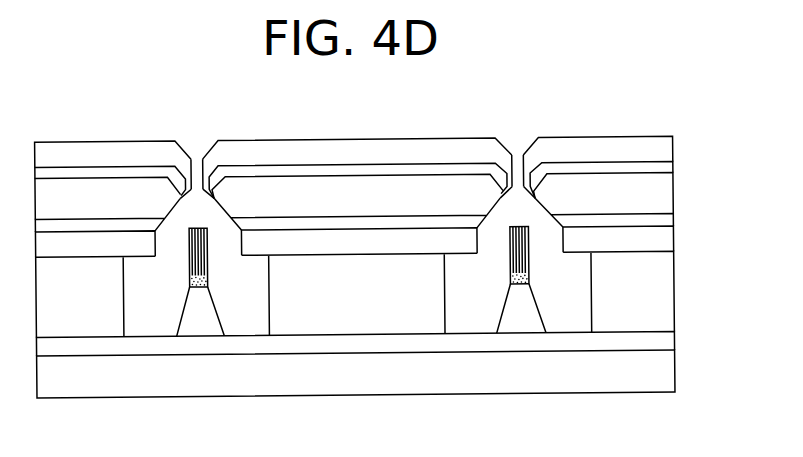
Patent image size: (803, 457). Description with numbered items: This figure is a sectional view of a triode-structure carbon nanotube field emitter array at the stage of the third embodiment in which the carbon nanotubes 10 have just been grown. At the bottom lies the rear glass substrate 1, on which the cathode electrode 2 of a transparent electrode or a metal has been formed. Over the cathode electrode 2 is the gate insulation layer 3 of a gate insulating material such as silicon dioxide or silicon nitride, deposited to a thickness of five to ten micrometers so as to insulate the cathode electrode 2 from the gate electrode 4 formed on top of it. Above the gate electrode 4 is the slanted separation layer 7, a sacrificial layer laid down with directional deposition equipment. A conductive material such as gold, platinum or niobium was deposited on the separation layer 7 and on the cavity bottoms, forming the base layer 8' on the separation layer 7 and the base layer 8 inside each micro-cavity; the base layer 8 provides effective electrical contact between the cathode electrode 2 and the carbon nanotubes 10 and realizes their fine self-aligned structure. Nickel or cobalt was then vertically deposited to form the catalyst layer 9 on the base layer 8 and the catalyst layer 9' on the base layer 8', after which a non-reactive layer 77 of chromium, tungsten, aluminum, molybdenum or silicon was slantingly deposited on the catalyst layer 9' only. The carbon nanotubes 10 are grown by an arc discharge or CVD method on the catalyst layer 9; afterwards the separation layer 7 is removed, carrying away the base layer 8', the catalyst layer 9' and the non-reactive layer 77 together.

The rear glass substrate 1 is at (665, 376).
The cathode electrode 2 is at (666, 346).
The gate insulation layer 3 is at (666, 298).
The gate electrode 4 is at (666, 246).
The separation layer 7 is at (667, 224).
The base layer 8 is at (378, 300).
The catalyst layer 9 is at (331, 271).
The carbon nanotubes 10 is at (199, 230).
The non-reactive layer 77 is at (101, 152).
The catalyst layer 9' is at (353, 138).
The base layer 8' is at (368, 145).